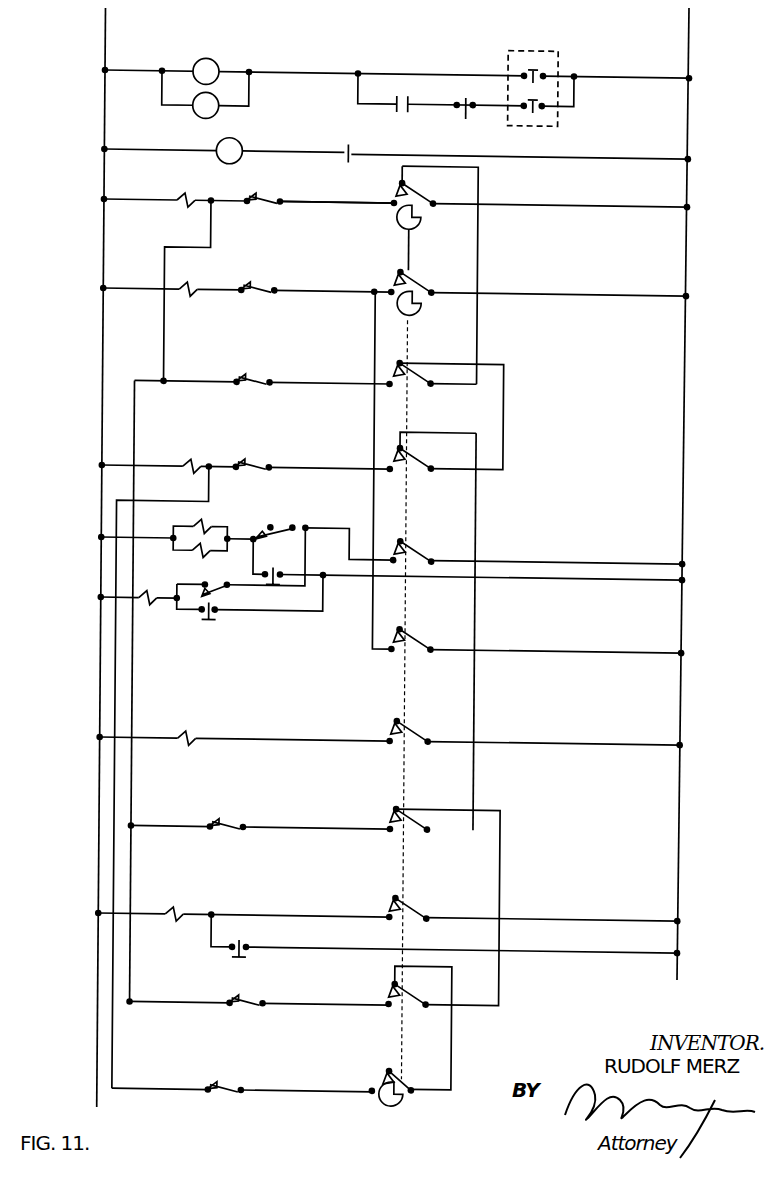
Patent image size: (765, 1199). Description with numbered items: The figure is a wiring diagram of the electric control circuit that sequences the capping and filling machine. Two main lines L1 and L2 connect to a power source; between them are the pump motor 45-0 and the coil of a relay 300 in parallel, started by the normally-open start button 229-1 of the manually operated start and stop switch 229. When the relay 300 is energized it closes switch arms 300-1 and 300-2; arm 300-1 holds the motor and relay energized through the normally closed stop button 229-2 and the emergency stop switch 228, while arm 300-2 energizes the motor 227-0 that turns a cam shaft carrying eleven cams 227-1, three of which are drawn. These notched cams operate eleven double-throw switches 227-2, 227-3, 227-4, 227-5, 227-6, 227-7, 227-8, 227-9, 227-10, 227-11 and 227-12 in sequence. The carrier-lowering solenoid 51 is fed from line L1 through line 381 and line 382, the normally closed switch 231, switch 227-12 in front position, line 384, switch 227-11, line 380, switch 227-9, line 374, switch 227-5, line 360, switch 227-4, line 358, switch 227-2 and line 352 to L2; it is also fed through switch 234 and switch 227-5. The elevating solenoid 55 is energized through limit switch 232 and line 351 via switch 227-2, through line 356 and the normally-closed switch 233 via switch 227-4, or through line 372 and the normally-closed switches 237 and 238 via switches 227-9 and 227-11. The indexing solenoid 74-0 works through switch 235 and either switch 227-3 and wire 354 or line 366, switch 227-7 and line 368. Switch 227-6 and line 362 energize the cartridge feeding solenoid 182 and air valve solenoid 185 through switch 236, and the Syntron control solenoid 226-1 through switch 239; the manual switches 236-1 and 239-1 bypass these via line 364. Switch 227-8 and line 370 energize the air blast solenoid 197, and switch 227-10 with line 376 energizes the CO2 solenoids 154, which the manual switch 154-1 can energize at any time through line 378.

The main line L1 is at (103, 42).
The main line L2 is at (689, 56).
The motor 45-0 is at (222, 62).
The relay 300 is at (195, 110).
The switch arm 300-1 is at (420, 97).
The switch arm 300-2 is at (350, 142).
The emergency stop switch 228 is at (468, 94).
The start and stop switch 229 is at (562, 52).
The start button 229-1 is at (529, 67).
The stop button 229-2 is at (540, 97).
The motor 227-0 is at (241, 139).
The cams 227-1 is at (421, 217).
The double-throw switch 227-2 is at (421, 193).
The double-throw switch 227-3 is at (419, 279).
The double-throw switch 227-4 is at (417, 385).
The double-throw switch 227-5 is at (414, 470).
The double-throw switch 227-6 is at (414, 544).
The double-throw switch 227-7 is at (415, 641).
The double-throw switch 227-8 is at (416, 729).
The double-throw switch 227-9 is at (417, 825).
The double-throw switch 227-10 is at (410, 904).
The double-throw switch 227-11 is at (417, 1000).
The double-throw switch 227-12 is at (419, 1086).
The solenoid 55 is at (186, 193).
The limit switch 232 is at (268, 195).
The line 351 is at (355, 194).
The line 352 is at (538, 199).
The solenoid 74-0 is at (191, 288).
The switch 235 is at (270, 287).
The wire 354 is at (545, 292).
The line 356 is at (167, 344).
The line 366 is at (376, 343).
The line 358 is at (481, 333).
The switch 233 is at (268, 378).
The line 360 is at (507, 434).
The line 372 is at (139, 430).
The line 381 is at (119, 459).
The solenoid 51 is at (199, 458).
The switch 234 is at (268, 462).
The line 382 is at (165, 499).
The cartridge feeding solenoid 182 is at (205, 522).
The air valve solenoid 185 is at (197, 556).
The switch 236 is at (286, 527).
The manually-operable switch 236-1 is at (277, 584).
The line 362 is at (525, 556).
The line 364 is at (563, 574).
The switch 239 is at (215, 582).
The manually-operable switch 239-1 is at (215, 622).
The Syntron control solenoid 226-1 is at (155, 615).
The line 368 is at (545, 647).
The solenoid 197 is at (192, 732).
The line 370 is at (557, 742).
The line 374 is at (481, 772).
The switch 237 is at (229, 821).
The solenoids 154 is at (179, 909).
The manually operable switch 154-1 is at (252, 939).
The line 376 is at (544, 915).
The line 378 is at (434, 943).
The line 380 is at (507, 988).
The switch 238 is at (260, 999).
The line 384 is at (460, 1049).
The switch 231 is at (234, 1081).